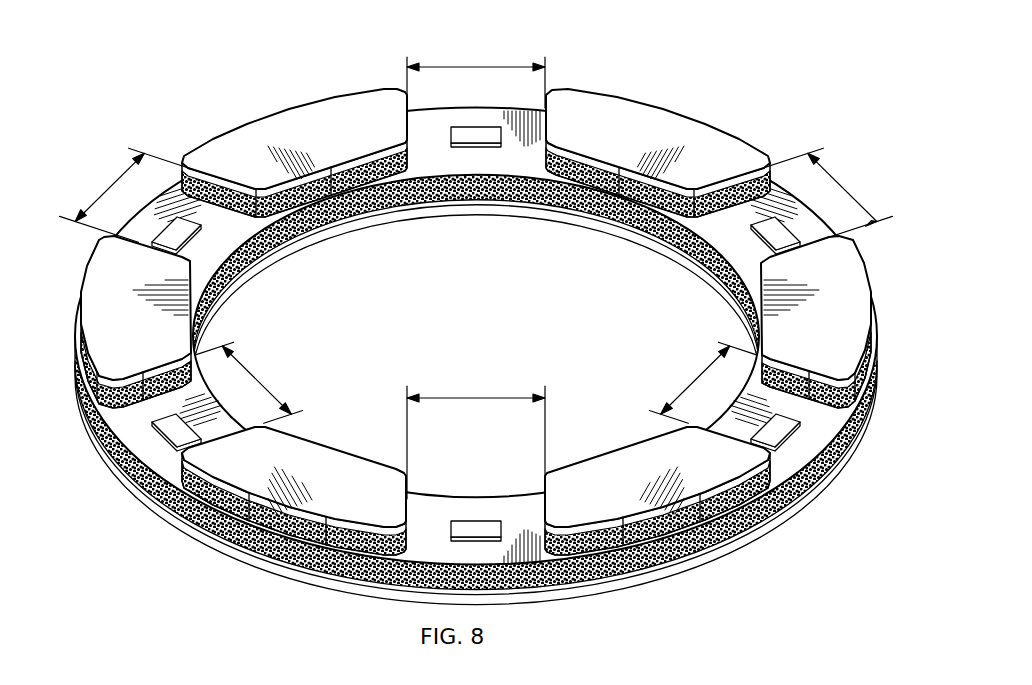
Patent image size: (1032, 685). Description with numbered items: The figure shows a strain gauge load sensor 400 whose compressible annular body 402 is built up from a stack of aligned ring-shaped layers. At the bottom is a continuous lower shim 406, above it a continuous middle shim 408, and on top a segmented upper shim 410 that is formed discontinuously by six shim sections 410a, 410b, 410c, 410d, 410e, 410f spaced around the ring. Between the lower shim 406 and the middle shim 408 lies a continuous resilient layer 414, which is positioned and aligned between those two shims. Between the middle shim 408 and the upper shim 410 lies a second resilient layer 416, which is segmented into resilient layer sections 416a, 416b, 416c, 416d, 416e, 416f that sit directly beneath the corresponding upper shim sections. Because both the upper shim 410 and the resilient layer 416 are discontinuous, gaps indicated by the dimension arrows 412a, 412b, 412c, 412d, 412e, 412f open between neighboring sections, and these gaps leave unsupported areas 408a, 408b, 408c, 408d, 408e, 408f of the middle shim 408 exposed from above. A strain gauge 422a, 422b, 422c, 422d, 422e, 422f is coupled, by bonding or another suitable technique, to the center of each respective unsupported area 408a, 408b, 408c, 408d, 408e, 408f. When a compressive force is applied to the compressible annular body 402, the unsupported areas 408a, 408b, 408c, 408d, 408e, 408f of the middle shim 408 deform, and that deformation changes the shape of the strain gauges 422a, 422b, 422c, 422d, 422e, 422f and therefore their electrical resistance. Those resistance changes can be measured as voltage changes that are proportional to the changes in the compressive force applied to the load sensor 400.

The load sensor 400 is at (477, 330).
The compressible annular body 402 is at (688, 118).
The lower shim 406 is at (230, 553).
The middle shim 408 is at (150, 506).
The unsupported area 408a is at (262, 263).
The unsupported area 408b is at (432, 162).
The unsupported area 408c is at (700, 256).
The unsupported area 408d is at (790, 470).
The unsupported area 408e is at (462, 511).
The unsupported area 408f is at (163, 472).
The upper shim 410 is at (737, 150).
The shim section 410a is at (105, 322).
The shim section 410b is at (294, 147).
The shim section 410c is at (659, 130).
The shim section 410d is at (848, 322).
The shim section 410e is at (657, 520).
The shim section 410f is at (294, 530).
The gap 412a is at (107, 188).
The gap 412b is at (476, 64).
The gap 412c is at (876, 212).
The gap 412d is at (690, 386).
The gap 412e is at (476, 394).
The gap 412f is at (279, 392).
The resilient layer 414 is at (190, 533).
The resilient layer 416 is at (294, 554).
The resilient layer section 416a is at (157, 388).
The resilient layer section 416b is at (337, 186).
The resilient layer section 416c is at (617, 181).
The resilient layer section 416d is at (795, 391).
The resilient layer section 416e is at (685, 575).
The resilient layer section 416f is at (261, 567).
The strain gauge 422a is at (200, 260).
The strain gauge 422b is at (486, 133).
The strain gauge 422c is at (750, 263).
The strain gauge 422d is at (822, 447).
The strain gauge 422e is at (478, 528).
The strain gauge 422f is at (150, 441).